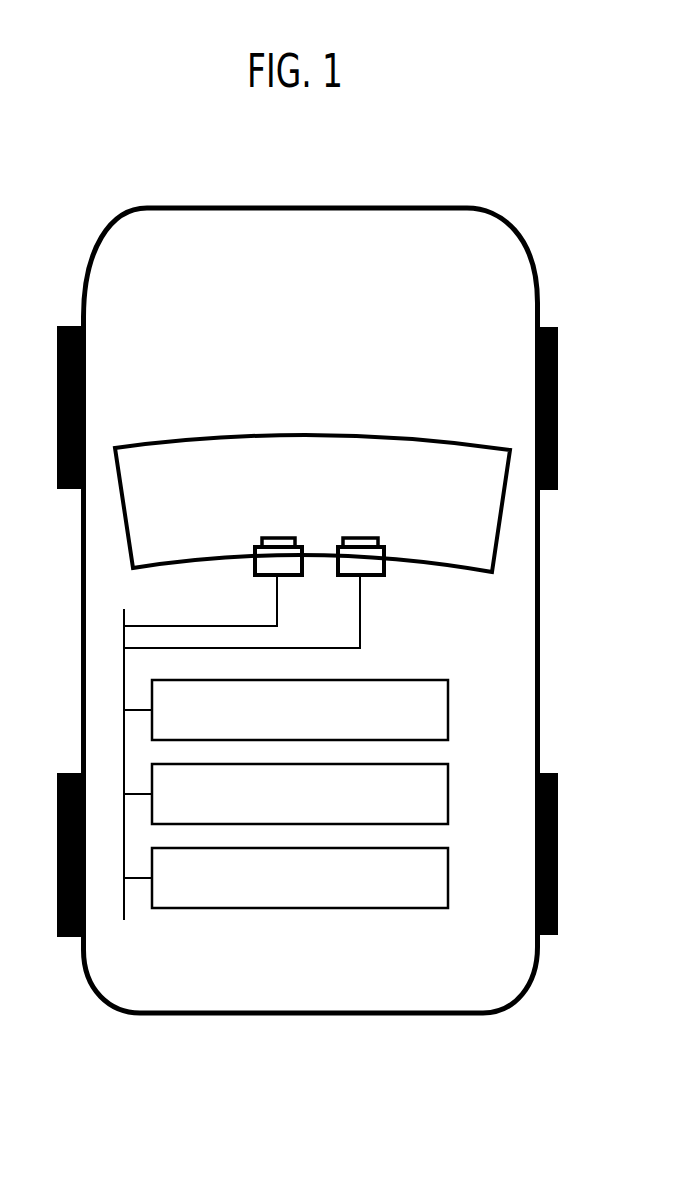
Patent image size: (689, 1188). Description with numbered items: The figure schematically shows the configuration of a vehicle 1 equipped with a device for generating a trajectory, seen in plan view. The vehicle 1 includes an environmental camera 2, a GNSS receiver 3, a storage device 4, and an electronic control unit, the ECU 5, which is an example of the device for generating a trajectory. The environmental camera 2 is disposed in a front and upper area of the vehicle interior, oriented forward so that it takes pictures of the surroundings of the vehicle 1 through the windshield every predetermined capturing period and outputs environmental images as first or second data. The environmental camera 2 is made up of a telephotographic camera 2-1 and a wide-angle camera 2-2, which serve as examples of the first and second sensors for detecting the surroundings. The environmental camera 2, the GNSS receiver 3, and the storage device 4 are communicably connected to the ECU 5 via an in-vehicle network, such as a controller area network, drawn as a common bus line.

The vehicle 1 is at (444, 197).
The environmental camera 2 is at (275, 604).
The telephotographic camera 2-1 is at (289, 578).
The wide-angle camera 2-2 is at (260, 620).
The GNSS receiver 3 is at (448, 703).
The storage device 4 is at (448, 787).
The ECU 5 is at (448, 871).